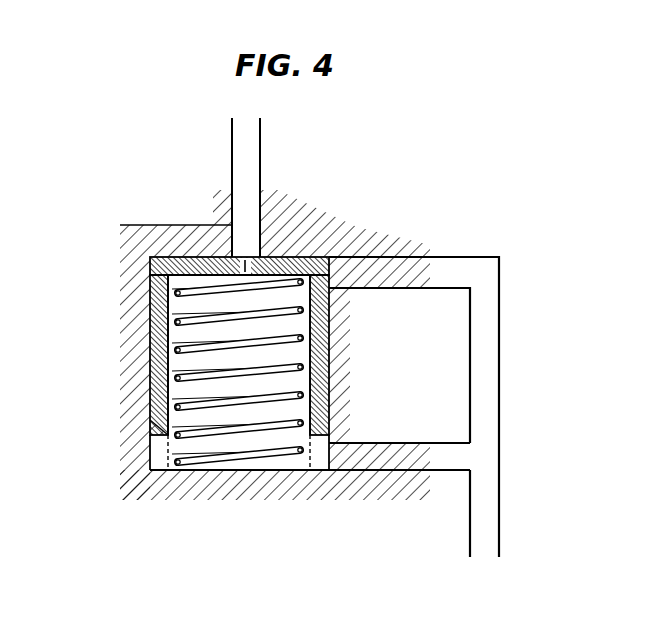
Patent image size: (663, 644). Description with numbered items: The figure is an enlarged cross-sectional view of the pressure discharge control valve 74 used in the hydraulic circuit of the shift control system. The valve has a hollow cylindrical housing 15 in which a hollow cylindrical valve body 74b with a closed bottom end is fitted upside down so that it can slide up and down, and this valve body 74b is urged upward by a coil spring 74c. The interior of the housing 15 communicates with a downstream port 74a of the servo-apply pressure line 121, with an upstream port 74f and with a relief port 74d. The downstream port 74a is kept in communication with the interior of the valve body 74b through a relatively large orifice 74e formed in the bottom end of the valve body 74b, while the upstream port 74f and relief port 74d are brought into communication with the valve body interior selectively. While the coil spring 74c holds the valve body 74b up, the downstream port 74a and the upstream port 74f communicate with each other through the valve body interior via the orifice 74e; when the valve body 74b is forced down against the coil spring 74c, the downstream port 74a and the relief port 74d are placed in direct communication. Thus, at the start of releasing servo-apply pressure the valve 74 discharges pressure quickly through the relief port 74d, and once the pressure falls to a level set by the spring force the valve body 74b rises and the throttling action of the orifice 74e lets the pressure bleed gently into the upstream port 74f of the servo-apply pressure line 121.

The hollow cylindrical housing 15 is at (130, 287).
The pressure discharge control valve 74 is at (300, 341).
The downstream port 74a is at (245, 238).
The hollow cylindrical valve body 74b is at (155, 367).
The coil spring 74c is at (148, 423).
The relief port 74d is at (345, 270).
The orifice 74e is at (243, 262).
The upstream port 74f is at (342, 462).
The servo-apply pressure line 121 is at (250, 150).